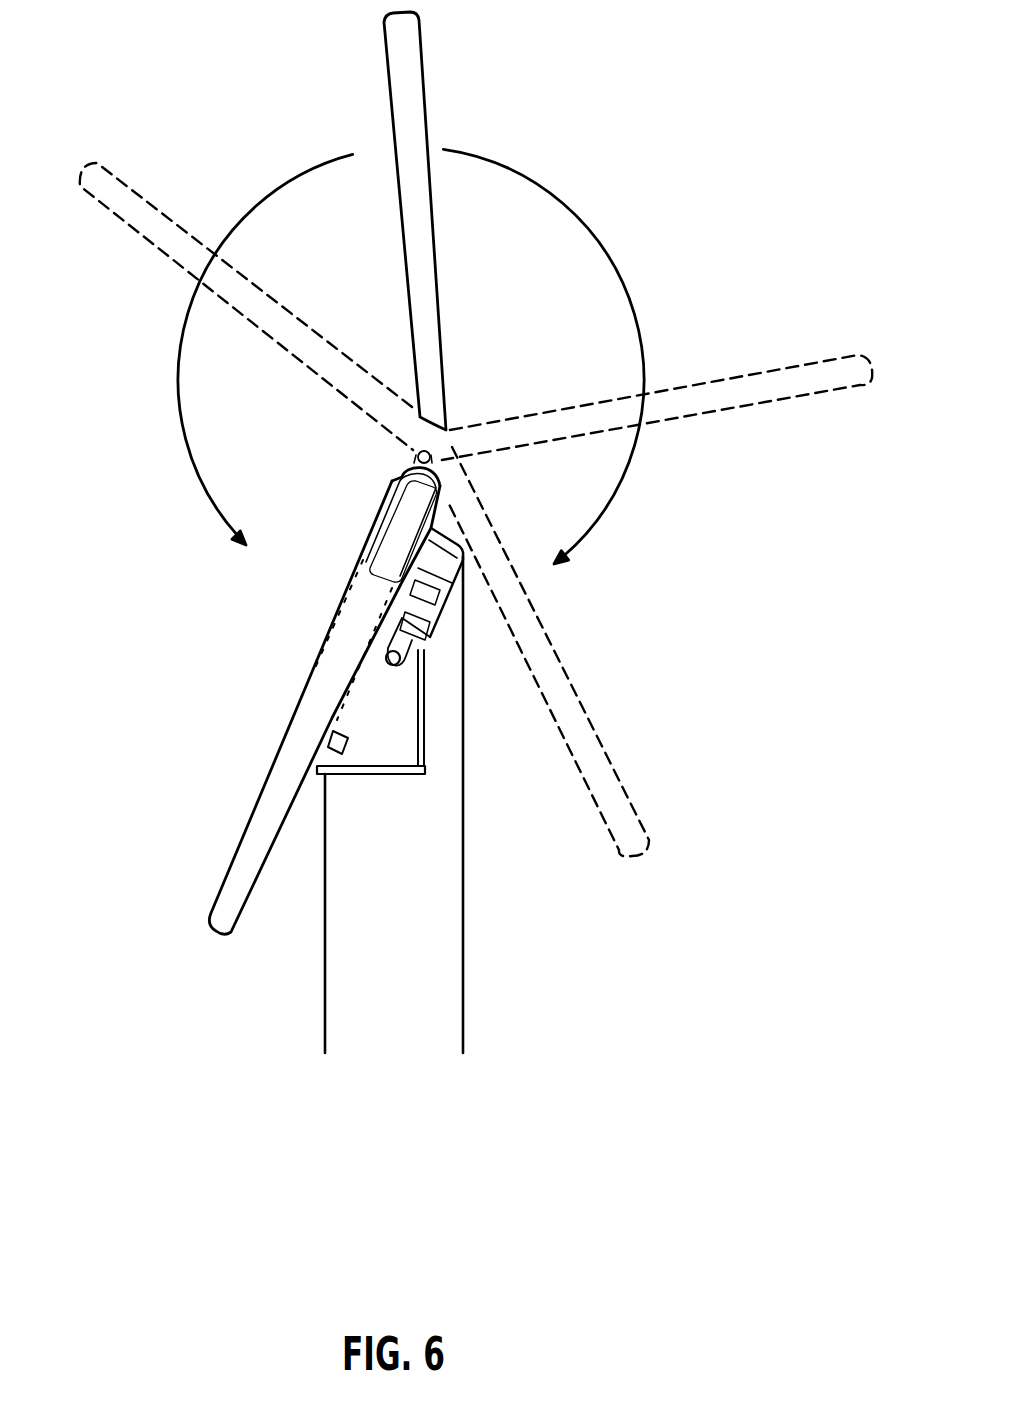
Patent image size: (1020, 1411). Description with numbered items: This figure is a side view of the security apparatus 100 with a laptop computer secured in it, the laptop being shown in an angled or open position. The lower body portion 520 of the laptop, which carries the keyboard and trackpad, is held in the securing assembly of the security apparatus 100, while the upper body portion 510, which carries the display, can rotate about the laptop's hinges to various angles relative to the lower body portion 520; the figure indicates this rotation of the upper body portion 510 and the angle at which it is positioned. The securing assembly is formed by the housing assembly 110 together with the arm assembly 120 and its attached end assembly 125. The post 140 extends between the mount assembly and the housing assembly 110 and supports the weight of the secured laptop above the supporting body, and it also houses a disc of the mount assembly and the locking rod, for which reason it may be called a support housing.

The security apparatus 100 is at (717, 153).
The housing assembly 110 is at (372, 777).
The arm assembly 120 is at (424, 635).
The end assembly 125 is at (428, 498).
The post 140 is at (464, 968).
The upper body portion 510 is at (428, 17).
The lower body portion 520 is at (373, 474).